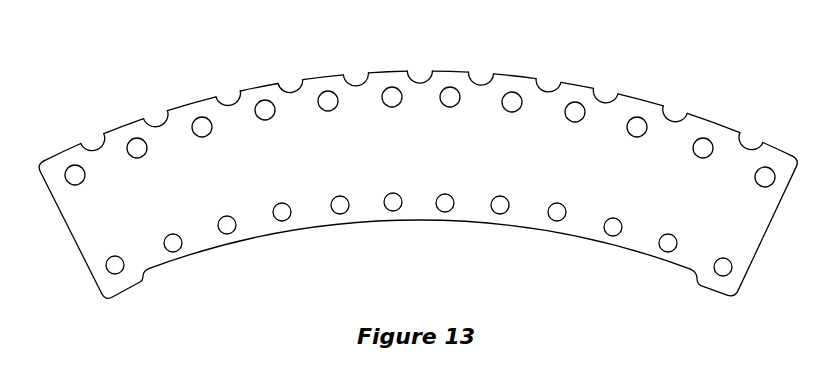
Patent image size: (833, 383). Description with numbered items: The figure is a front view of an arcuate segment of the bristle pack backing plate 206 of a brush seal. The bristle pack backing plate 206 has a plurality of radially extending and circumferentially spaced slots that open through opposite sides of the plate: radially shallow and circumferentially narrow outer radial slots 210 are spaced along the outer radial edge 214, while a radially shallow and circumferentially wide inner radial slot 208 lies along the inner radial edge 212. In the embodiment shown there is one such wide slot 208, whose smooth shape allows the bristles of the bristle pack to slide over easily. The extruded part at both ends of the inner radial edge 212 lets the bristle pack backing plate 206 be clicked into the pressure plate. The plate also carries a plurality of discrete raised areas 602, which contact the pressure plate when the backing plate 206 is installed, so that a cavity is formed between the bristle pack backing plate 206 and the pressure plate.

The bristle pack backing plate 206 is at (418, 196).
The inner radial slot 208 is at (312, 231).
The outer radial slot 210 is at (229, 93).
The inner radial edge 212 is at (709, 294).
The outer radial edge 214 is at (518, 74).
The raised areas 602 is at (703, 137).